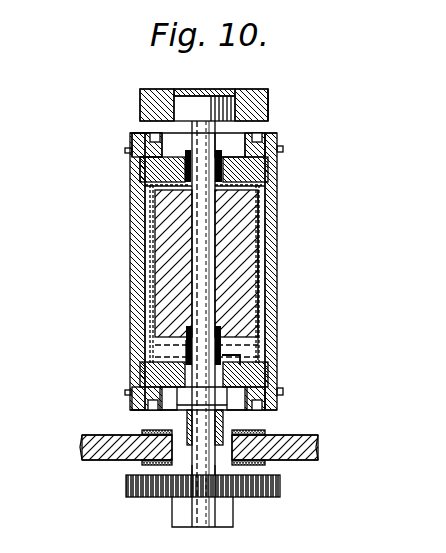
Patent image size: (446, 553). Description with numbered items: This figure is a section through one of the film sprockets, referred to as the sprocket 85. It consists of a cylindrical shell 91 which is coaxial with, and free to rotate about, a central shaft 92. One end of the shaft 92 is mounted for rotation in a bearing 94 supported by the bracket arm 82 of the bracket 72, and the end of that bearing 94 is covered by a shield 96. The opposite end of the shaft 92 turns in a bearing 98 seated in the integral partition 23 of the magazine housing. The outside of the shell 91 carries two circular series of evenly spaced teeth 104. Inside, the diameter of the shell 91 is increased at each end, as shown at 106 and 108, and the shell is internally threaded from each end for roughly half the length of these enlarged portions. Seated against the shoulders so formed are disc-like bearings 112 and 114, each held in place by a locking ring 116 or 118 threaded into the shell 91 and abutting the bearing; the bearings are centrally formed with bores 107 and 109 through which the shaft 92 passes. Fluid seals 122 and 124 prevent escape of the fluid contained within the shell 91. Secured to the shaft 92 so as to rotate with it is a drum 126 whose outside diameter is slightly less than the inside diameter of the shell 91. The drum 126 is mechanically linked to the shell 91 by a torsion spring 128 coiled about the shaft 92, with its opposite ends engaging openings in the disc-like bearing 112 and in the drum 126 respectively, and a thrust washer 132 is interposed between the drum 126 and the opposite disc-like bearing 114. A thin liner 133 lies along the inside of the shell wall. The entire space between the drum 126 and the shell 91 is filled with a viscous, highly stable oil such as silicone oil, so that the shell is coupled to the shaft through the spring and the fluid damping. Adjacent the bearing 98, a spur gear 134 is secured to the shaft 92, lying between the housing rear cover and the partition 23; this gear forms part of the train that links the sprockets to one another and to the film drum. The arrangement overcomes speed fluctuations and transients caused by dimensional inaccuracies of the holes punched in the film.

The integral partition 23 is at (295, 437).
The bracket 72 is at (268, 105).
The bracket arm 82 is at (268, 93).
The sprocket 85 is at (301, 244).
The cylindrical shell 91 is at (278, 300).
The shaft 92 is at (215, 125).
The bearing 94 is at (232, 97).
The shield 96 is at (215, 90).
The bearing 98 is at (183, 455).
The teeth 104 is at (283, 150).
The portion of increased inside diameter 106 is at (270, 170).
The bore 107 is at (240, 145).
The portion of increased inside diameter 108 is at (270, 372).
The bore 109 is at (230, 402).
The disc-like bearing 112 is at (140, 370).
The disc-like bearing 114 is at (137, 165).
The locking ring 116 is at (147, 137).
The locking ring 118 is at (138, 408).
The fluid seal 122 is at (148, 185).
The fluid seal 124 is at (176, 365).
The drum 126 is at (156, 262).
The torsion spring 128 is at (228, 352).
The thrust washer 132 is at (265, 190).
The right liner 133 is at (258, 220).
The spur gear 134 is at (280, 483).